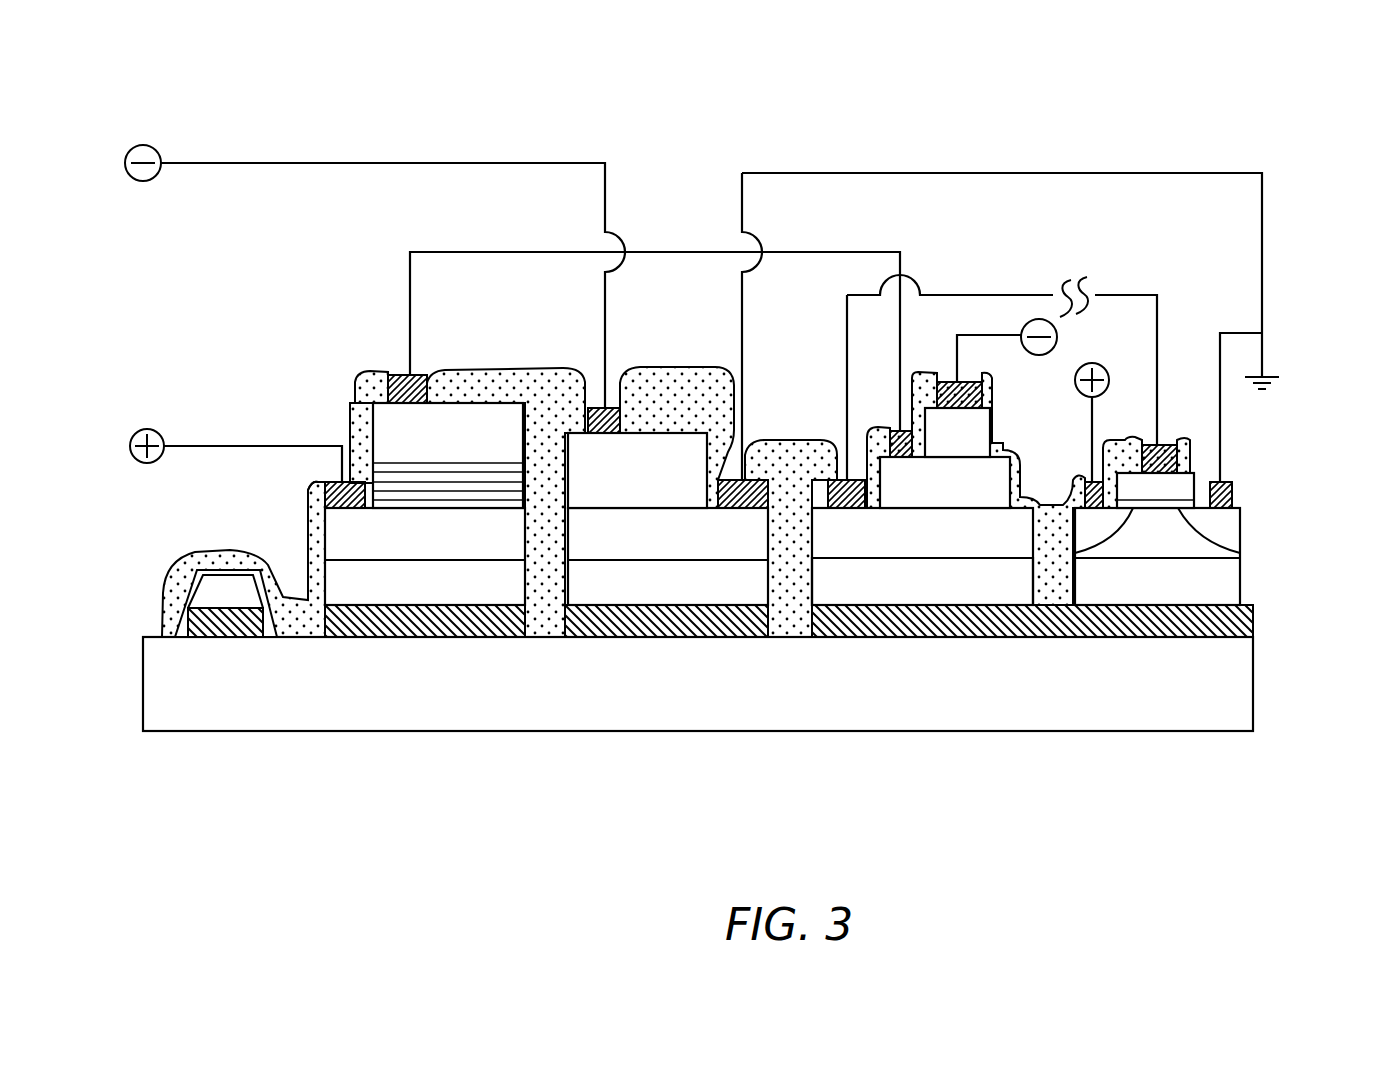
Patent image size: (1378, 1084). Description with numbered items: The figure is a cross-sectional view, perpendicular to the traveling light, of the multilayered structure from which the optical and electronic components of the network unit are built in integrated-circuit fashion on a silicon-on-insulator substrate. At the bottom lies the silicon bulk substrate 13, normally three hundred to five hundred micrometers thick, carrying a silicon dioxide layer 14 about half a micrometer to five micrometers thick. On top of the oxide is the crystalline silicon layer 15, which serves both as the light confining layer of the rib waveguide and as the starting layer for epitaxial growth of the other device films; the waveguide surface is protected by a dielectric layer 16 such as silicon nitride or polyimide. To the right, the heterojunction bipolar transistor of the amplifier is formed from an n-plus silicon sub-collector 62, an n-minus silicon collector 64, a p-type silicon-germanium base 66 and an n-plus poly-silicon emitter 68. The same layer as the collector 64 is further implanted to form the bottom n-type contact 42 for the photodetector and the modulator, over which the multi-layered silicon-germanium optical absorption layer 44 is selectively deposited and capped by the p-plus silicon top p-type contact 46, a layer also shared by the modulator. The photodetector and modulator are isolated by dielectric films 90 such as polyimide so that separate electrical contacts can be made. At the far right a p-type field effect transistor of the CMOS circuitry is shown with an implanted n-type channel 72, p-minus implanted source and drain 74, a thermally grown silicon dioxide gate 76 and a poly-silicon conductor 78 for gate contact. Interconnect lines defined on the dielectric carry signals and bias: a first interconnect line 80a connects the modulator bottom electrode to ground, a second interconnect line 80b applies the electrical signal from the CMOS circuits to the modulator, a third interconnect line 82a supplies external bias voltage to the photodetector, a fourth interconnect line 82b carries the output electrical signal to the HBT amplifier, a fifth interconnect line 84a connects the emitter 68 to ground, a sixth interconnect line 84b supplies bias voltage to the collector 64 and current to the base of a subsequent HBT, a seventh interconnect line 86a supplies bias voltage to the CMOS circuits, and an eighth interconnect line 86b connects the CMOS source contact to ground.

The silicon bulk substrate 13 is at (724, 707).
The silicon dioxide layer 14 is at (377, 622).
The crystalline silicon layer 15 is at (315, 580).
The dielectric layer 16 is at (178, 578).
The bottom n-type contact 42 is at (460, 551).
The optical absorption layer 44 is at (403, 483).
The top p-type contact 46 is at (368, 395).
The sub-collector 62 is at (934, 602).
The collector 64 is at (936, 551).
The base 66 is at (975, 502).
The emitter 68 is at (974, 454).
The channel 72 is at (1176, 602).
The source and drain 74 is at (1222, 528).
The gate 76 is at (1168, 493).
The poly-silicon conductor 78 is at (1193, 463).
The first interconnect line 80a is at (1038, 165).
The second interconnect line 80b is at (564, 158).
The third interconnect line 82a is at (272, 437).
The fourth interconnect line 82b is at (565, 247).
The fifth interconnect line 84a is at (997, 328).
The sixth interconnect line 84b is at (833, 415).
The seventh interconnect line 86a is at (1087, 457).
The eighth interconnect line 86b is at (1227, 417).
The dielectric films 90 is at (540, 360).